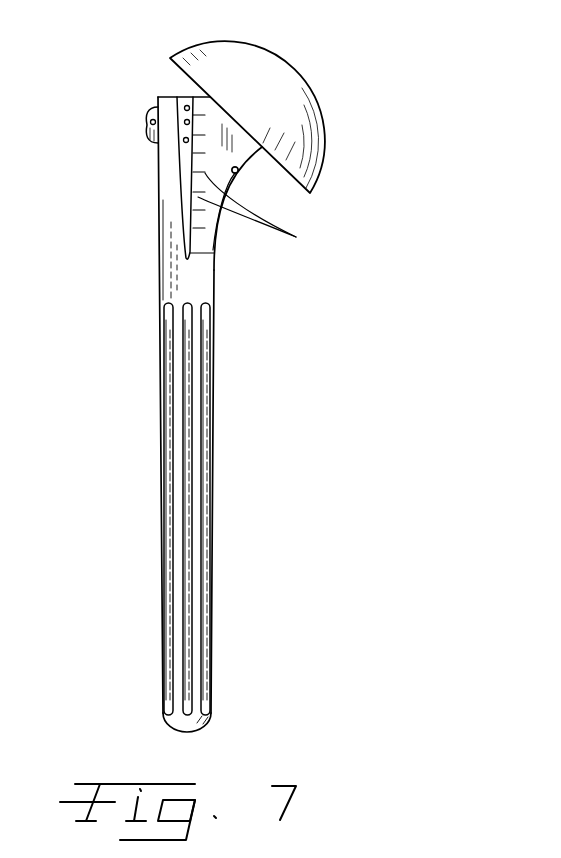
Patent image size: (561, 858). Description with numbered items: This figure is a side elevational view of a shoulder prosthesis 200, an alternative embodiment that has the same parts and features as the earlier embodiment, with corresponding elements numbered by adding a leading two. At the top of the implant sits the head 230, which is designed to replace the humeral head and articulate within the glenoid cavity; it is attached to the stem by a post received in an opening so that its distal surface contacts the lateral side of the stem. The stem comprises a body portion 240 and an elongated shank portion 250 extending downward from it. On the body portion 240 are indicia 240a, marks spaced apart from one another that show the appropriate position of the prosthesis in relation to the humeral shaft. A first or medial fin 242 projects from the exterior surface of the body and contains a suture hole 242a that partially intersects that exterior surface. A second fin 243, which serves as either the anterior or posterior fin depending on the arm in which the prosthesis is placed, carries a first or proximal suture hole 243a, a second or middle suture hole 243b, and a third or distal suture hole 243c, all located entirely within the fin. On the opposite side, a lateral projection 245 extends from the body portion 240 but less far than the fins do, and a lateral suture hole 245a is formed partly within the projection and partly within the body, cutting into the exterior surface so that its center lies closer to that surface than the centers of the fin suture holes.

The shoulder prosthesis 200 is at (120, 543).
The head 230 is at (303, 72).
The body portion 240 is at (228, 234).
The indicia 240a is at (281, 217).
The medial fin 242 is at (238, 173).
The suture hole 242a is at (240, 167).
The second fin 243 is at (183, 202).
The proximal suture hole 243a is at (184, 104).
The middle suture hole 243b is at (185, 124).
The distal suture hole 243c is at (184, 142).
The lateral projection 245 is at (150, 137).
The lateral suture hole 245a is at (151, 121).
The shank portion 250 is at (218, 607).